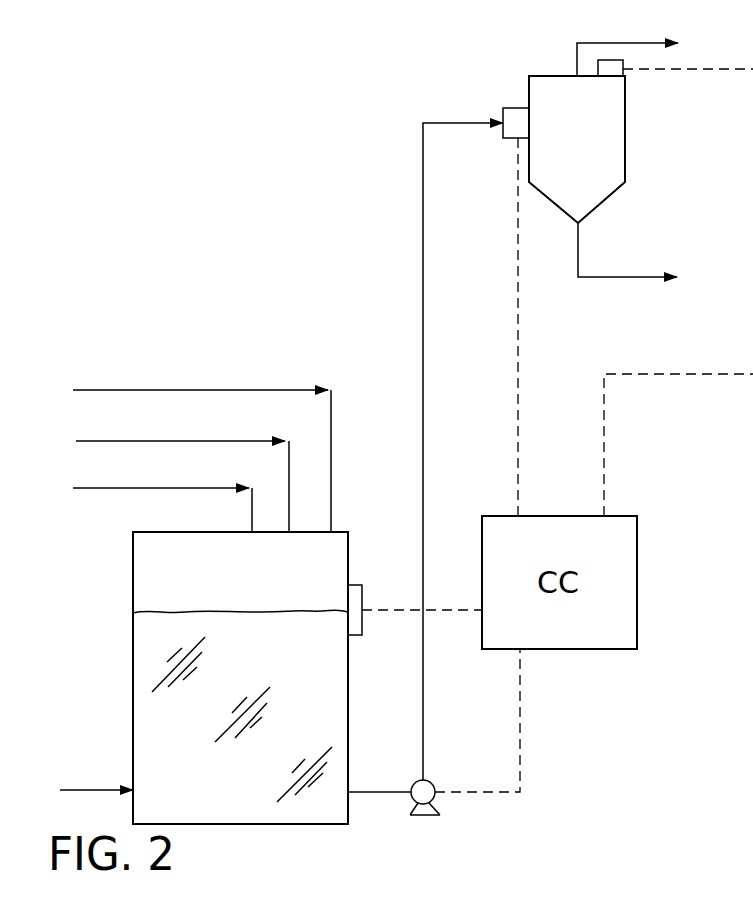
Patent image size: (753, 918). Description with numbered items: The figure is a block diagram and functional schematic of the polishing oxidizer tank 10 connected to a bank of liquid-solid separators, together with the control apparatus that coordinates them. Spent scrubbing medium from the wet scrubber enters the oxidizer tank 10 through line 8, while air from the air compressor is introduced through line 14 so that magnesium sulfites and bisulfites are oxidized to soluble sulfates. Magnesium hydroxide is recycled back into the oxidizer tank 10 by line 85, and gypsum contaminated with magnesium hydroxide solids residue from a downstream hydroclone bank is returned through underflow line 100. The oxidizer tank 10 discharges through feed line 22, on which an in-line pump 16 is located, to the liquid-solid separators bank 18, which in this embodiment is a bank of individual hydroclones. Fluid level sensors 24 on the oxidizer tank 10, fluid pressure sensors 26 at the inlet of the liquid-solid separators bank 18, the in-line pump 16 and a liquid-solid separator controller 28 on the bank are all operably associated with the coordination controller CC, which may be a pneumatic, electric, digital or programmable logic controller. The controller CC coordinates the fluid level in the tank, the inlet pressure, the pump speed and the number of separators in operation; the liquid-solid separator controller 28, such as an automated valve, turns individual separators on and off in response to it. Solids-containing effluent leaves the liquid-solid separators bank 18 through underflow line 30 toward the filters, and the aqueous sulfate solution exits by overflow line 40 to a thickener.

The line 8 is at (184, 390).
The oxidizer tank 10 is at (127, 555).
The line 14 is at (95, 790).
The in-line pump 16 is at (435, 784).
The liquid-solid separators bank 18 is at (625, 140).
The feed line 22 is at (421, 327).
The fluid level sensors 24 is at (360, 595).
The fluid pressure sensors 26 is at (503, 108).
The liquid-solid separator controller 28 is at (627, 66).
The underflow line 30 is at (627, 277).
The overflow line 40 is at (609, 43).
The line 85 is at (186, 441).
The underflow line 100 is at (182, 488).